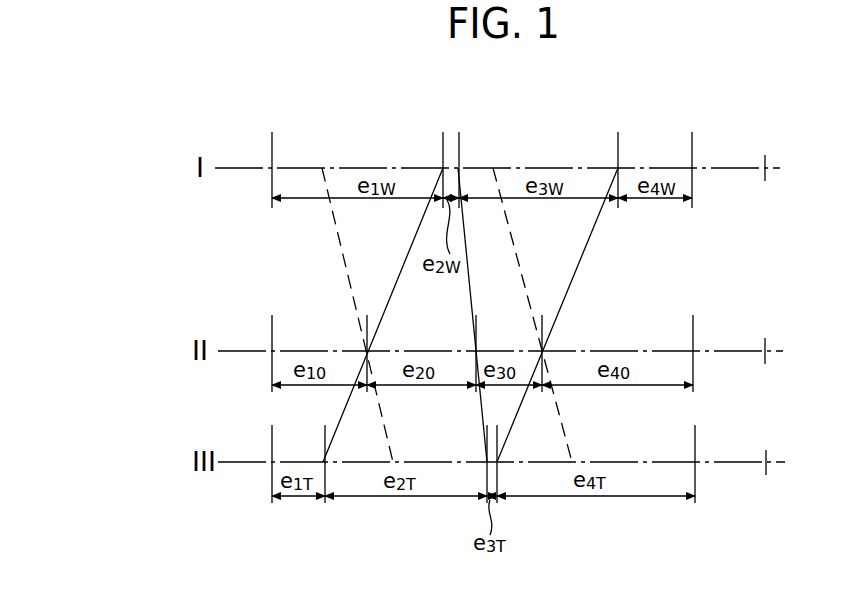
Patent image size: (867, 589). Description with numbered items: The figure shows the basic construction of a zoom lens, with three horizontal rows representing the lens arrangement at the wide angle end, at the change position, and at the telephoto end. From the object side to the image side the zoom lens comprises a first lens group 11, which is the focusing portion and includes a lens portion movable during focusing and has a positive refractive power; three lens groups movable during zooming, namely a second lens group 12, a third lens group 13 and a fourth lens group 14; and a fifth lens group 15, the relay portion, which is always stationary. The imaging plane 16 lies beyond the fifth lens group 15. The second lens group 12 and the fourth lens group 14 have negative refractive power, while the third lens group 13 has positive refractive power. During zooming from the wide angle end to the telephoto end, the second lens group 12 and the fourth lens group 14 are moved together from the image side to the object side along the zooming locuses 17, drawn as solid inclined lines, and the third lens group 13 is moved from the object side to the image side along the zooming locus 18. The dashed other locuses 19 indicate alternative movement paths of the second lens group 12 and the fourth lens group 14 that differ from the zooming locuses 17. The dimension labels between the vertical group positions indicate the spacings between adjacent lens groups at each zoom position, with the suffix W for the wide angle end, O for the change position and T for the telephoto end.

The first lens group 11 is at (272, 137).
The second lens group 12 is at (443, 140).
The third lens group 13 is at (459, 143).
The fourth lens group 14 is at (618, 140).
The fifth lens group 15 is at (692, 146).
The imaging plane 16 is at (765, 160).
The zooming locuses 17 is at (393, 295).
The zooming locus 18 is at (473, 276).
The other locuses 19 is at (338, 228).